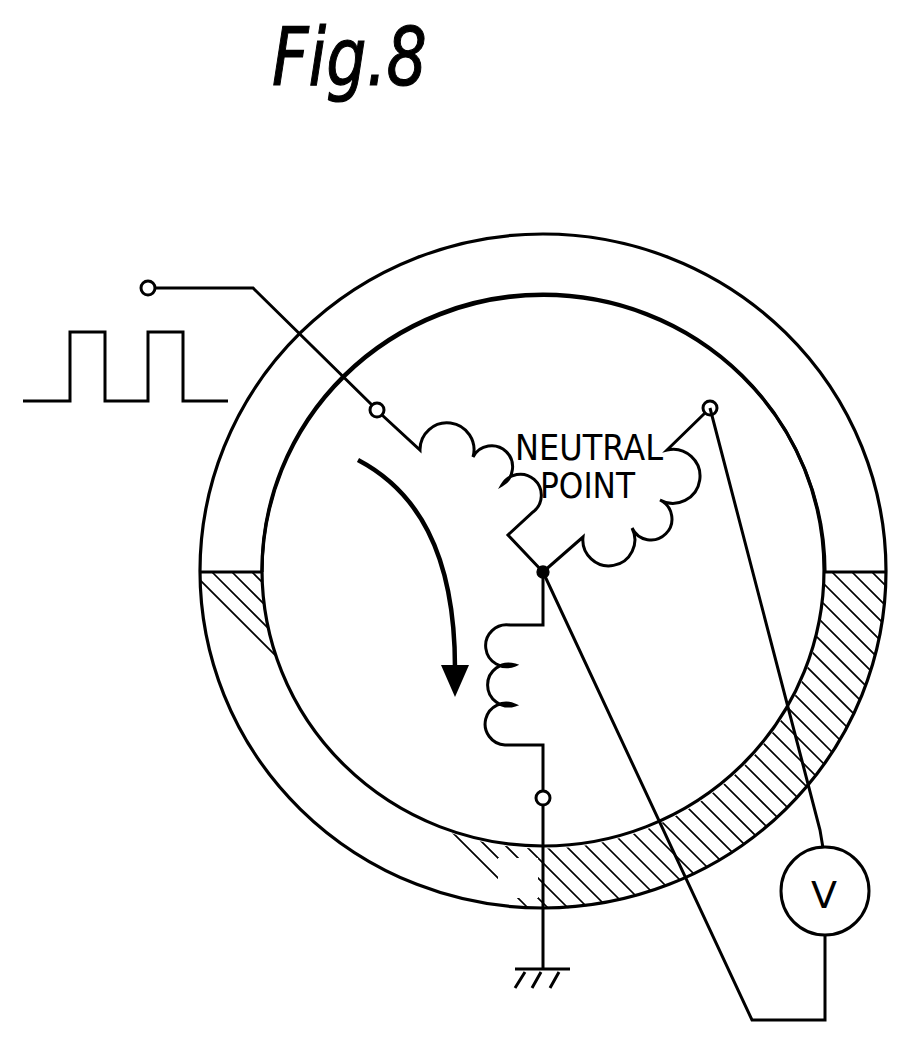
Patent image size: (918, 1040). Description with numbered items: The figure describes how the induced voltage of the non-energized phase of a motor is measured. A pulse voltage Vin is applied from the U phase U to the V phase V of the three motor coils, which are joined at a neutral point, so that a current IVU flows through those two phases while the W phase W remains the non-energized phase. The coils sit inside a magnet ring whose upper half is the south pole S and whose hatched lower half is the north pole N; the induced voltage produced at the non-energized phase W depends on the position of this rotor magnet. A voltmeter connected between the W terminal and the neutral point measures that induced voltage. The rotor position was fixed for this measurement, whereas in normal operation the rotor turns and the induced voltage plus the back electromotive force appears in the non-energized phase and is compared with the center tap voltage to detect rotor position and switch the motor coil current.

The U-phase coil terminal U is at (456, 463).
The V-phase coil terminal V is at (539, 780).
The W-phase coil terminal W is at (630, 464).
The input voltage Vin is at (197, 321).
The south pole of stator magnet S is at (543, 407).
The north pole of stator magnet N is at (549, 750).
The current flowing from V to U coil IVU is at (413, 578).